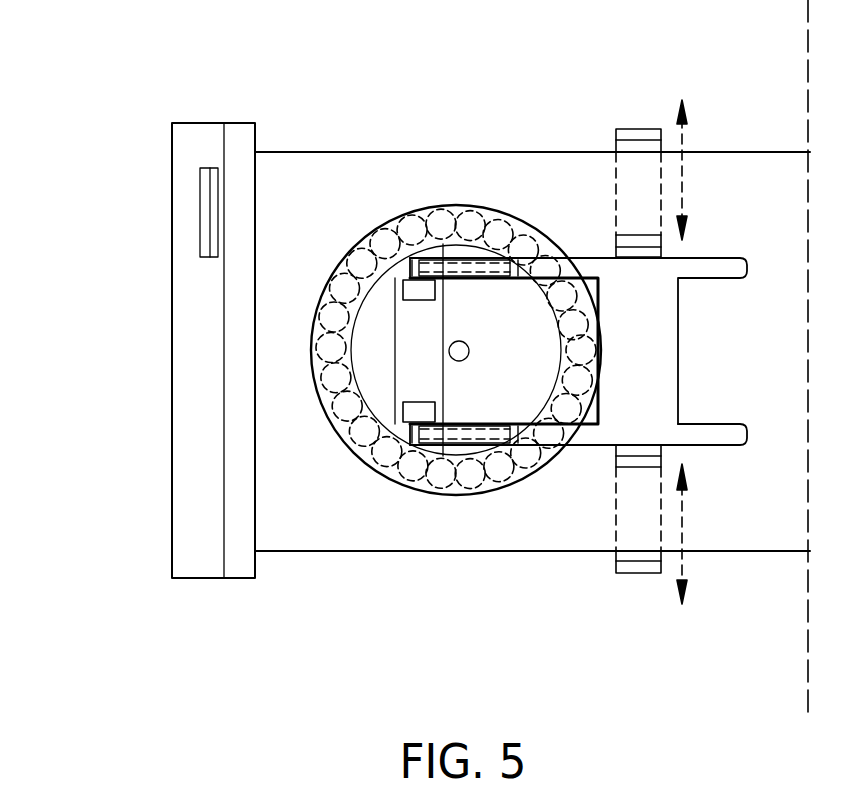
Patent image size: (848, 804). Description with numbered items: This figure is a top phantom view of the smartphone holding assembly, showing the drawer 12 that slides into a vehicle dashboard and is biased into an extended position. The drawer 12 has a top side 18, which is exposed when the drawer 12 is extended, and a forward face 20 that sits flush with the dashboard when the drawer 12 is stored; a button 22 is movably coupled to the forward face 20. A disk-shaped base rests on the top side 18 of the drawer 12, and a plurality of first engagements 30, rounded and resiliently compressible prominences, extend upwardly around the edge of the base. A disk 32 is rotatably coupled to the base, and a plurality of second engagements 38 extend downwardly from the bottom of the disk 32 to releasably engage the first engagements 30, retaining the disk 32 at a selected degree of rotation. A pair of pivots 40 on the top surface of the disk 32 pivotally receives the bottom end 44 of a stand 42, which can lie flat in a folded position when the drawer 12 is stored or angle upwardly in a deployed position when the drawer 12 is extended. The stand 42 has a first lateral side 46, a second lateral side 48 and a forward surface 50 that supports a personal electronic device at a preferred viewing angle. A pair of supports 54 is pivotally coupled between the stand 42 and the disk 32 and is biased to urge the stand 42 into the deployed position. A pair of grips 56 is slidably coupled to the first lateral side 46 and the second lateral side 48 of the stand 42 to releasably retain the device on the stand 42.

The drawer 12 is at (375, 152).
The top side 18 is at (503, 525).
The forward face 20 is at (195, 347).
The button 22 is at (208, 208).
The first engagements 30 is at (373, 448).
The disk 32 is at (462, 206).
The second engagements 38 is at (360, 277).
The pivots 40 is at (425, 288).
The stand 42 is at (578, 446).
The bottom end 44 is at (417, 257).
The first lateral side 46 is at (706, 258).
The second lateral side 48 is at (718, 446).
The forward surface 50 is at (623, 289).
The supports 54 is at (515, 268).
The grips 56 is at (645, 243).